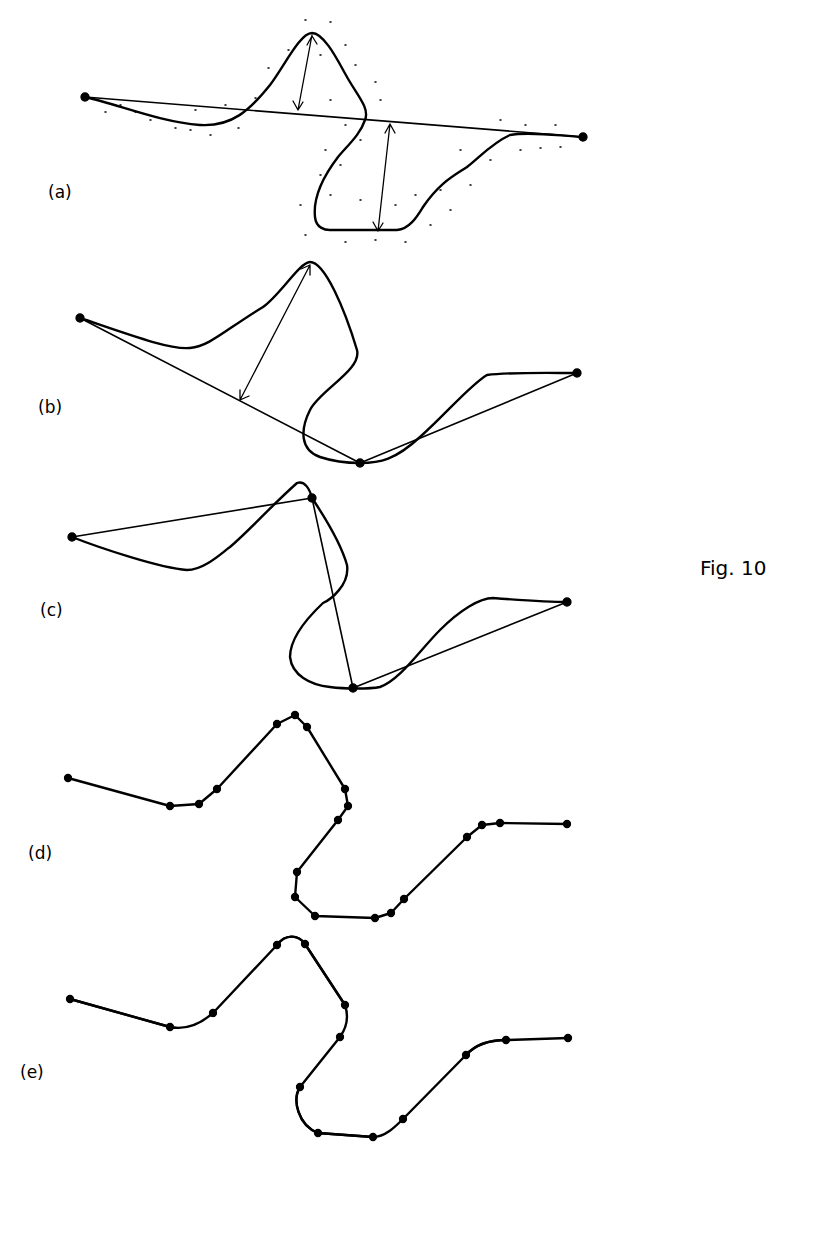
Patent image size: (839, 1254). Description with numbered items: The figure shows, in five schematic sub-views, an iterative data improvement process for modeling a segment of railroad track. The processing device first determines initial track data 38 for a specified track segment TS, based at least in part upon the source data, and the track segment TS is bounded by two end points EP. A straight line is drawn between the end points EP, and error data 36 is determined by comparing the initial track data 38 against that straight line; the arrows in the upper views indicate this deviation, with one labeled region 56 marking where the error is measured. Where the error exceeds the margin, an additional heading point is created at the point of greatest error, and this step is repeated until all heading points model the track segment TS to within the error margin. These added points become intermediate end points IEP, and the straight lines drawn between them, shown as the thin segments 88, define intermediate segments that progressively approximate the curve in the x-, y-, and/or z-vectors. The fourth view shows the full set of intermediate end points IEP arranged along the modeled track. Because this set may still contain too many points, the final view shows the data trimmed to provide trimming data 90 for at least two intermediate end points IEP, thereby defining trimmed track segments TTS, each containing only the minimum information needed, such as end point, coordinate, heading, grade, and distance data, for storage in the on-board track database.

The initial track data 38 is at (377, 50).
The curve deviation 56 is at (406, 158).
The track segment TS is at (455, 127).
The end point EP is at (85, 97).
The error data 36 is at (298, 338).
The interpolating line segment 88 is at (175, 368).
The intermediate end point IEP is at (80, 318).
The trimming data 90 is at (427, 1020).
The trimmed track segment TTS is at (230, 995).